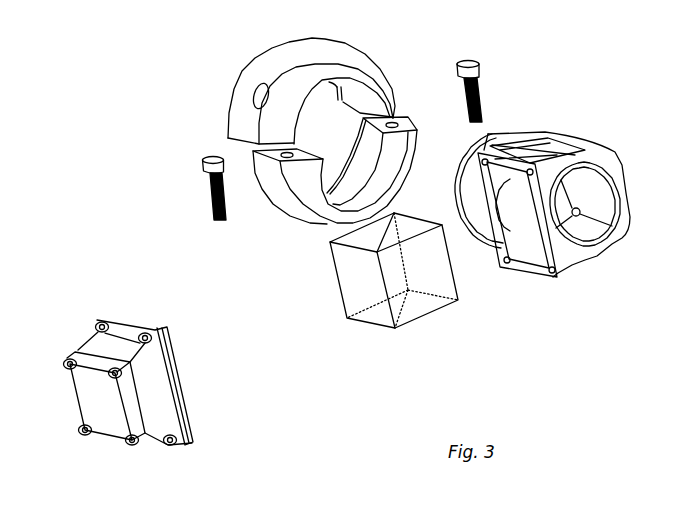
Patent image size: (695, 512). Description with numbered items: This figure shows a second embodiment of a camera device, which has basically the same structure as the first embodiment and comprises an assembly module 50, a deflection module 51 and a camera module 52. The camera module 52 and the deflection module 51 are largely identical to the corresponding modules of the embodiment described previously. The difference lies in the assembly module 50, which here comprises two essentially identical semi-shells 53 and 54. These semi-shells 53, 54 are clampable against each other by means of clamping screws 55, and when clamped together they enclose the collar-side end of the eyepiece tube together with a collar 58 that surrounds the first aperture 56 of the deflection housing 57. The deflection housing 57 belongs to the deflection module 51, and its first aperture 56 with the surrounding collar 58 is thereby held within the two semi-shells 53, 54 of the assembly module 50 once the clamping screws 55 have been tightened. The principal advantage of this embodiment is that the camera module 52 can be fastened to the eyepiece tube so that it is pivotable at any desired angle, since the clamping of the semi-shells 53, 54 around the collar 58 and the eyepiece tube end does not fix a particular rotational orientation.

The assembly module 50 is at (197, 44).
The deflection module 51 is at (606, 97).
The camera module 52 is at (62, 318).
The semi-shell 53 is at (364, 70).
The semi-shell 54 is at (288, 203).
The clamping screw 55 is at (212, 192).
The first aperture 56 is at (517, 197).
The deflection housing 57 is at (618, 232).
The collar 58 is at (521, 129).